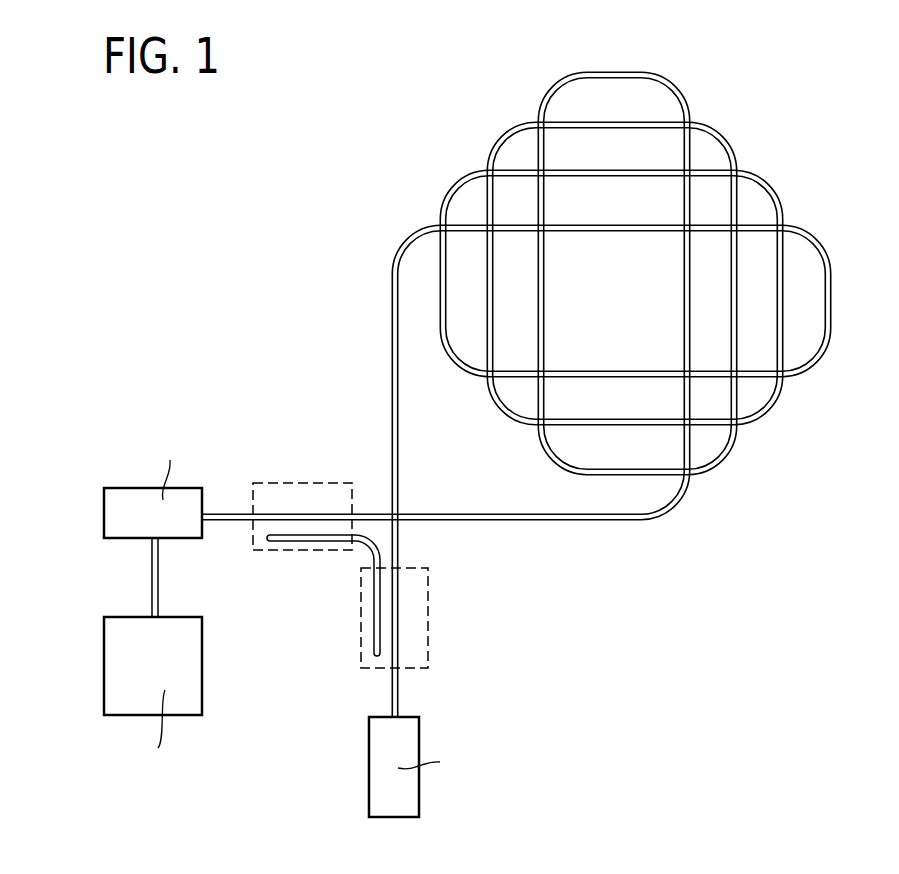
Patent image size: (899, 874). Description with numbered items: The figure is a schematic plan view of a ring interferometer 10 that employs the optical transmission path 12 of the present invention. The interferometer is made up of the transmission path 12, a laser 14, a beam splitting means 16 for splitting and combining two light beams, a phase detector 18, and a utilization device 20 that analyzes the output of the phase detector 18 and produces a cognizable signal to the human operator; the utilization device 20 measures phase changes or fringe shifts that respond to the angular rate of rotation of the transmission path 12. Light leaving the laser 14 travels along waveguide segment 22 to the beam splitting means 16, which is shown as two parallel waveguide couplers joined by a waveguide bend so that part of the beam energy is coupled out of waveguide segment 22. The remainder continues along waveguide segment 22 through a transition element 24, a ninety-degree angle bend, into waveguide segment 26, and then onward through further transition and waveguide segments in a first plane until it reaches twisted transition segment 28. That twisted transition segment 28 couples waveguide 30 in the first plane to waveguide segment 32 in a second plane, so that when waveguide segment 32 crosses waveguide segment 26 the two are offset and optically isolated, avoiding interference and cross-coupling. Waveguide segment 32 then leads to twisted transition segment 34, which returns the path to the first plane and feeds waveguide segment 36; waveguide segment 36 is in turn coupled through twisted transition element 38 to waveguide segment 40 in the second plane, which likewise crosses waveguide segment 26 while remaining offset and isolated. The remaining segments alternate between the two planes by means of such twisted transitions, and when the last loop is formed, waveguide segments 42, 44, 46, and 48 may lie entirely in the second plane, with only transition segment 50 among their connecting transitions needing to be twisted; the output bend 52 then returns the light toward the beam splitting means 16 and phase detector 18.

The ring interferometer 10 is at (336, 354).
The optical transmission path 12 is at (789, 381).
The laser 14 is at (378, 760).
The beam splitting means 16 is at (368, 600).
The phase detector 18 is at (115, 517).
The utilization device 20 is at (115, 666).
The waveguide segment 22 is at (391, 298).
The transition element 24 is at (405, 248).
The waveguide segment 26 is at (631, 225).
The twisted transition segment 28 is at (453, 360).
The waveguide 30 is at (587, 378).
The waveguide segment 32 is at (447, 258).
The twisted transition segment 34 is at (447, 200).
The waveguide segment 36 is at (643, 172).
The twisted transition element 38 is at (765, 188).
The waveguide segment 40 is at (786, 262).
The waveguide segment 42 is at (546, 290).
The waveguide segment 44 is at (607, 72).
The waveguide segment 46 is at (689, 258).
The waveguide segment 48 is at (612, 522).
The twisted transition segment 50 is at (565, 460).
The output bend 52 is at (683, 512).